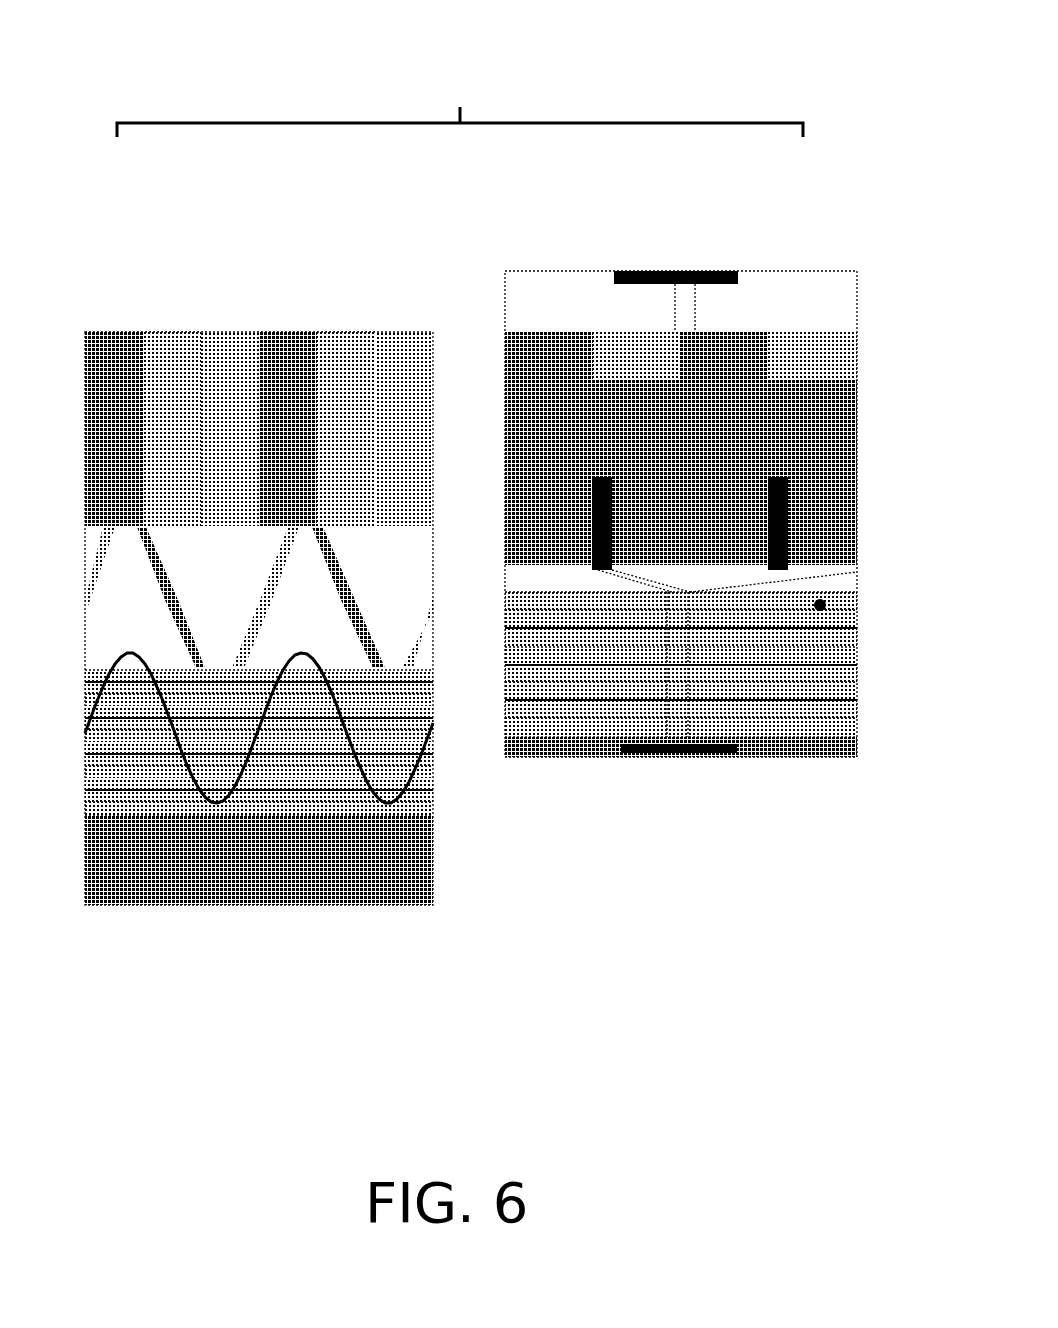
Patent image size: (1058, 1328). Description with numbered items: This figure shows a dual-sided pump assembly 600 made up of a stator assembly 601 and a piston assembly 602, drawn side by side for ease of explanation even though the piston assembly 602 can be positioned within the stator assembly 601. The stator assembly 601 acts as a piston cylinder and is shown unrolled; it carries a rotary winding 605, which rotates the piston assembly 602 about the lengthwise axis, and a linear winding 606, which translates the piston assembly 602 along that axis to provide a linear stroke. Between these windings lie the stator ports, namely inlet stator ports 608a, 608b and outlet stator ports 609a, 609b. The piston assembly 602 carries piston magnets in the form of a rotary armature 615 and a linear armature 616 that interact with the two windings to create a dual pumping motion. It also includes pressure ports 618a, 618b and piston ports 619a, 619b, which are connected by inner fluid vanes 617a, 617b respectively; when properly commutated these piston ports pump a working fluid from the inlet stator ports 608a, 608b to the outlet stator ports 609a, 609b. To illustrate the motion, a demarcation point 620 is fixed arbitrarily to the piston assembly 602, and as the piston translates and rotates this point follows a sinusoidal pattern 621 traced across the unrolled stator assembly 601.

The pump assembly 600 is at (468, 102).
The stator assembly 601 is at (252, 232).
The piston assembly 602 is at (692, 232).
The rotary winding 605 is at (85, 396).
The linear winding 606 is at (85, 787).
The inlet stator port 608a is at (98, 586).
The inlet stator port 608b is at (282, 585).
The outlet stator port 609a is at (169, 578).
The outlet stator port 609b is at (356, 577).
The rotary armature 615 is at (580, 330).
The linear armature 616 is at (856, 682).
The inner fluid vane 617a is at (678, 586).
The inner fluid vane 617b is at (690, 313).
The pressure port 618a is at (614, 503).
The pressure port 618b is at (790, 505).
The piston port 619a is at (699, 758).
The piston port 619b is at (705, 268).
The demarcation point 620 is at (828, 611).
The pattern 621 is at (402, 797).